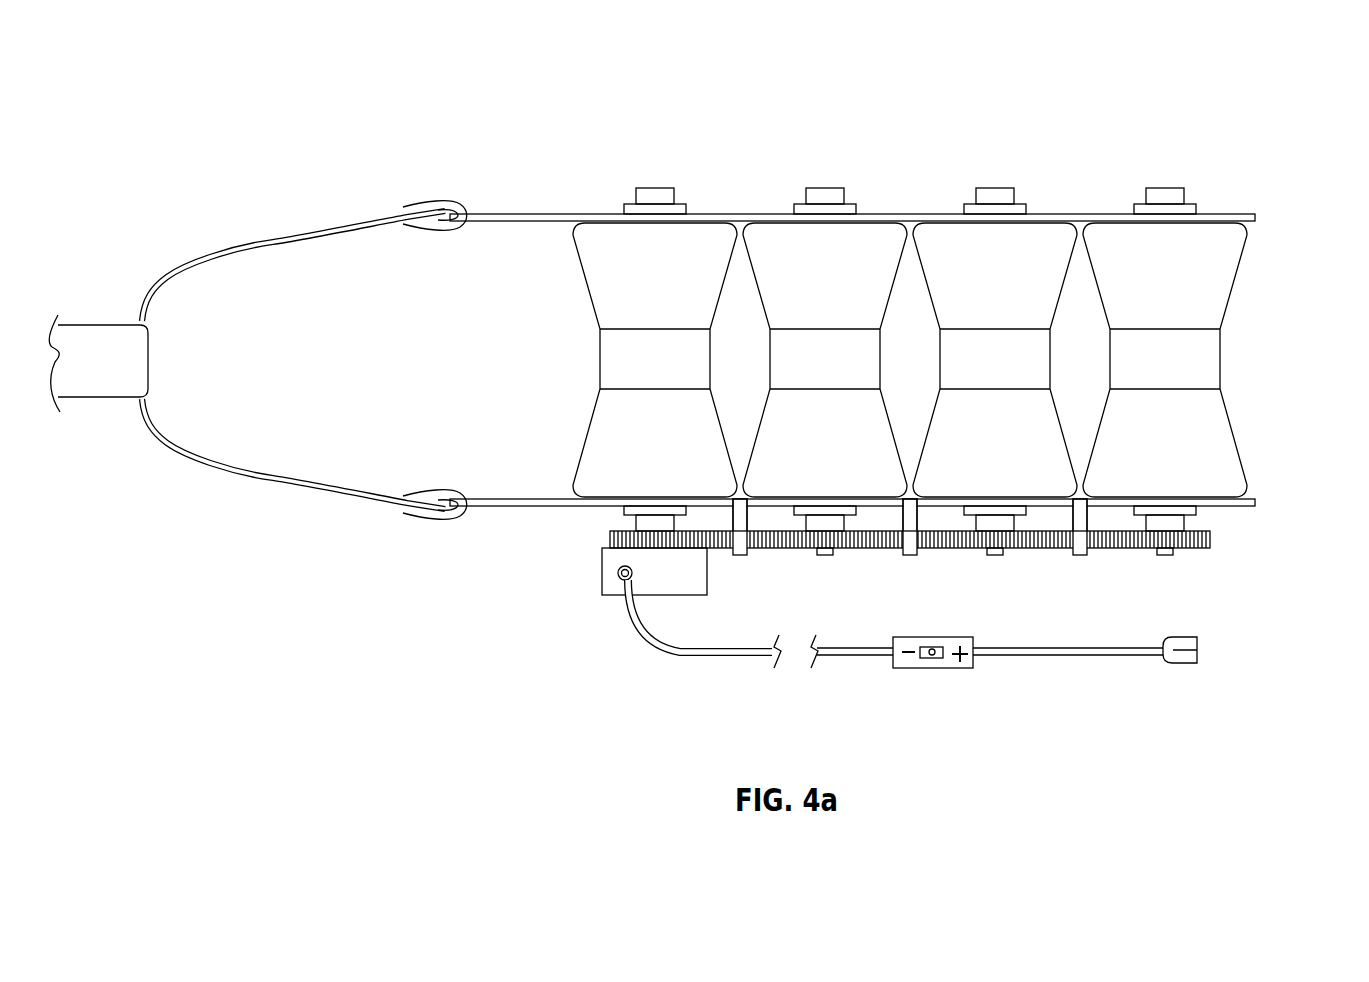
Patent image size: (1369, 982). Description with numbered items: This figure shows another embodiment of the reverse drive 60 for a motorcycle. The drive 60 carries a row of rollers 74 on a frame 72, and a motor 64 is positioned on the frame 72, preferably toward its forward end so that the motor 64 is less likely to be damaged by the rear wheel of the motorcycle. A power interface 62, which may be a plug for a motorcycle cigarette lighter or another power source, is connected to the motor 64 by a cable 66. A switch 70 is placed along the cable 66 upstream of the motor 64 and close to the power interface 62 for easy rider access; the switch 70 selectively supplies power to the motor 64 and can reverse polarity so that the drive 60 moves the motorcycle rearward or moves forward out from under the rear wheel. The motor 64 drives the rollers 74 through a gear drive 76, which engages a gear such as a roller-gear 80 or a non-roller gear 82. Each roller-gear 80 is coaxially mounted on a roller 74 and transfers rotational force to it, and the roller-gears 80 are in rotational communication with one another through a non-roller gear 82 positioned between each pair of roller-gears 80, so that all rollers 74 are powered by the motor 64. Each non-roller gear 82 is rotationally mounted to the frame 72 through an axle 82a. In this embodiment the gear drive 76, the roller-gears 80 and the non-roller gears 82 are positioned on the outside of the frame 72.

The reverse drive 60 is at (1291, 656).
The power interface 62 is at (1197, 660).
The motor 64 is at (603, 582).
The cable 66 is at (1043, 650).
The switch 70 is at (950, 663).
The frame 72 is at (514, 506).
The rollers 74 is at (635, 270).
The gear drive 76 is at (612, 540).
The roller-gear 80 is at (957, 493).
The non-roller gear 82 is at (747, 552).
The axle 82a is at (740, 515).